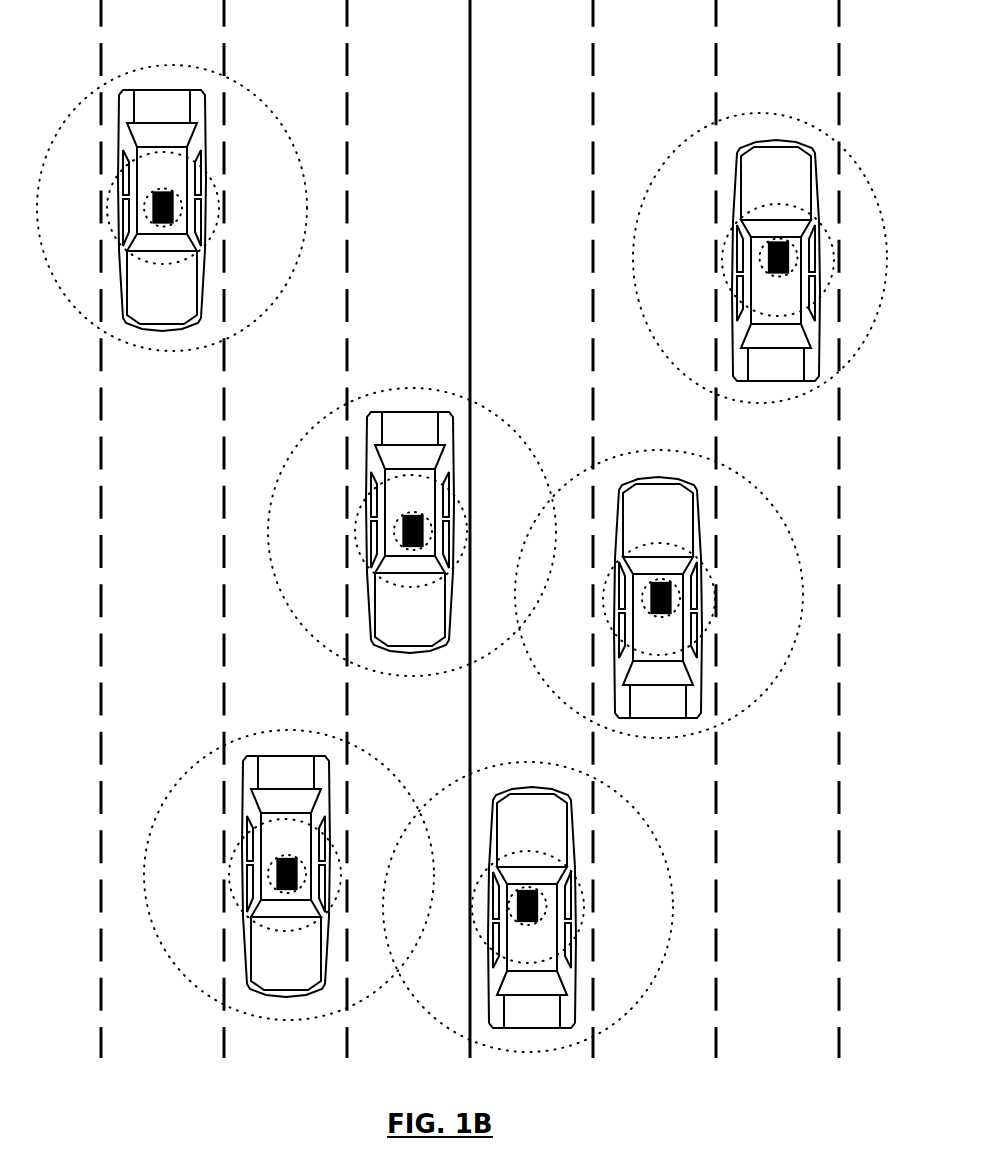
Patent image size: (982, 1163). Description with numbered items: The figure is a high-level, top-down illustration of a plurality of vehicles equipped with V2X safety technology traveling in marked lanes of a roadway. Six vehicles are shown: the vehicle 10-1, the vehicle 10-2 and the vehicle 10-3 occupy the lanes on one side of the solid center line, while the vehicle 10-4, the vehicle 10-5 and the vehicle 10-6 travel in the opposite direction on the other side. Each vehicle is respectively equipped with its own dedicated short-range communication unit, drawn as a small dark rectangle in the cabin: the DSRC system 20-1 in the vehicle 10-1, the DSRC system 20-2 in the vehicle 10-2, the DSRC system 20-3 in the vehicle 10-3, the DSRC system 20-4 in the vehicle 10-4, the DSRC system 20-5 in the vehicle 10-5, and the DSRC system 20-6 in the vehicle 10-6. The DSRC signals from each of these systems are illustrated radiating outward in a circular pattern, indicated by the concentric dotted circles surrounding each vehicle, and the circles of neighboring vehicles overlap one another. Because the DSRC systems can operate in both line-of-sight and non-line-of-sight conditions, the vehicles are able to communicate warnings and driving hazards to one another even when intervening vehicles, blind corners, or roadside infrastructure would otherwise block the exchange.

The vehicle 10-1 is at (163, 90).
The vehicle 10-2 is at (283, 756).
The vehicle 10-3 is at (410, 412).
The vehicle 10-4 is at (525, 788).
The vehicle 10-5 is at (658, 478).
The vehicle 10-6 is at (784, 141).
The DSRC system 20-1 is at (153, 212).
The DSRC system 20-2 is at (277, 871).
The DSRC system 20-3 is at (403, 534).
The DSRC system 20-4 is at (537, 906).
The DSRC system 20-5 is at (670, 606).
The DSRC system 20-6 is at (788, 266).